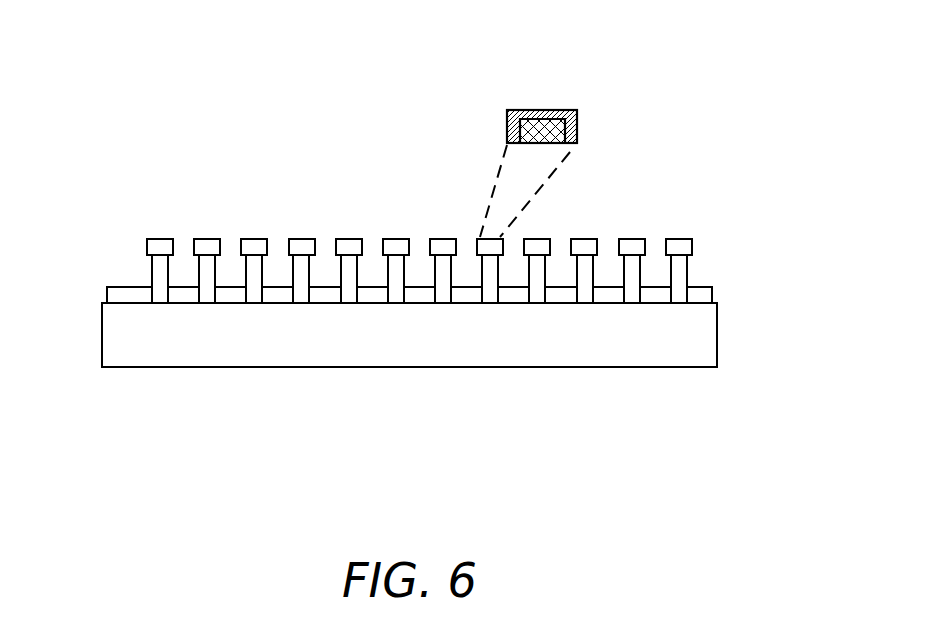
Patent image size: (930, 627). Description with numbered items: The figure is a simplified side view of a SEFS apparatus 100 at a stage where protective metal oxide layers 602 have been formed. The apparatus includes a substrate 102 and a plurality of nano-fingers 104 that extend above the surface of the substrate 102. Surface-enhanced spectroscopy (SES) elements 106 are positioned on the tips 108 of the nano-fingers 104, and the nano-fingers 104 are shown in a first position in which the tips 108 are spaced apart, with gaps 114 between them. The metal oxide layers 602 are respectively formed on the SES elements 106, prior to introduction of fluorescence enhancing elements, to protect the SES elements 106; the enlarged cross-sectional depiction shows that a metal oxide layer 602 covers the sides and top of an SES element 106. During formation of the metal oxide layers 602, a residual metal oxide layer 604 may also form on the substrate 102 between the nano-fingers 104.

The SEFS apparatus 100 is at (132, 28).
The substrate 102 is at (717, 338).
The nano-fingers 104 is at (148, 284).
The SES elements 106 is at (577, 120).
The tips 108 is at (303, 256).
The gaps 114 is at (323, 232).
The metal oxide layers 602 is at (507, 120).
The residual metal oxide layer 604 is at (187, 304).